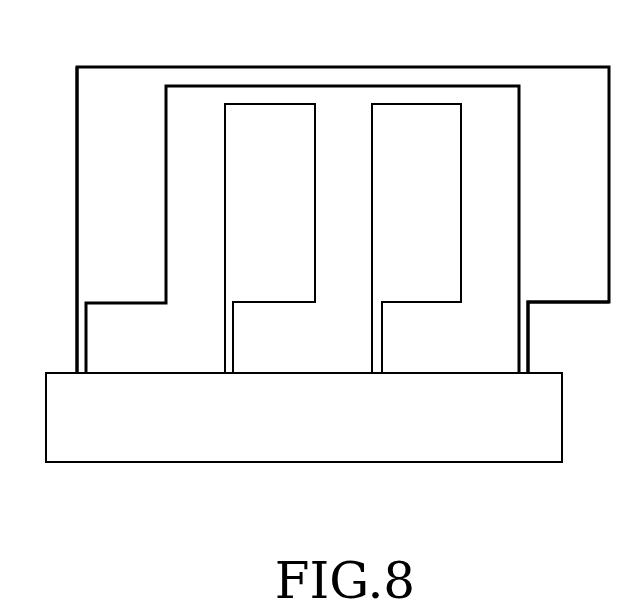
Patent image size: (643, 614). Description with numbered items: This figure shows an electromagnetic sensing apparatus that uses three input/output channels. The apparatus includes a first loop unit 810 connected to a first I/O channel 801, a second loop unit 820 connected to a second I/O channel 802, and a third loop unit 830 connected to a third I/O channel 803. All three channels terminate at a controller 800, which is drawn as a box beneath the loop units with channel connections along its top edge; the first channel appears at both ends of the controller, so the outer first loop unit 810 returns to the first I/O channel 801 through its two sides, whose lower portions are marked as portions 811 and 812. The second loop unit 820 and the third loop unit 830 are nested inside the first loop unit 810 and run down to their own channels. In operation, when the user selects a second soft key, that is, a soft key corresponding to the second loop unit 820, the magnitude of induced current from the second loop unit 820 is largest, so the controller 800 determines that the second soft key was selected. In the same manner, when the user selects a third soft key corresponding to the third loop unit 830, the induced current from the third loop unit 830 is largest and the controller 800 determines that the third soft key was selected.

The first loop unit 810 is at (132, 63).
The first I/O channel 801 is at (75, 333).
The first electrode inner portion 811 is at (128, 305).
The first electrode right portion 812 is at (570, 304).
The second I/O channel 802 is at (223, 333).
The second loop unit 820 is at (276, 304).
The third I/O channel 803 is at (370, 333).
The third loop unit 830 is at (422, 304).
The controller 800 is at (311, 464).